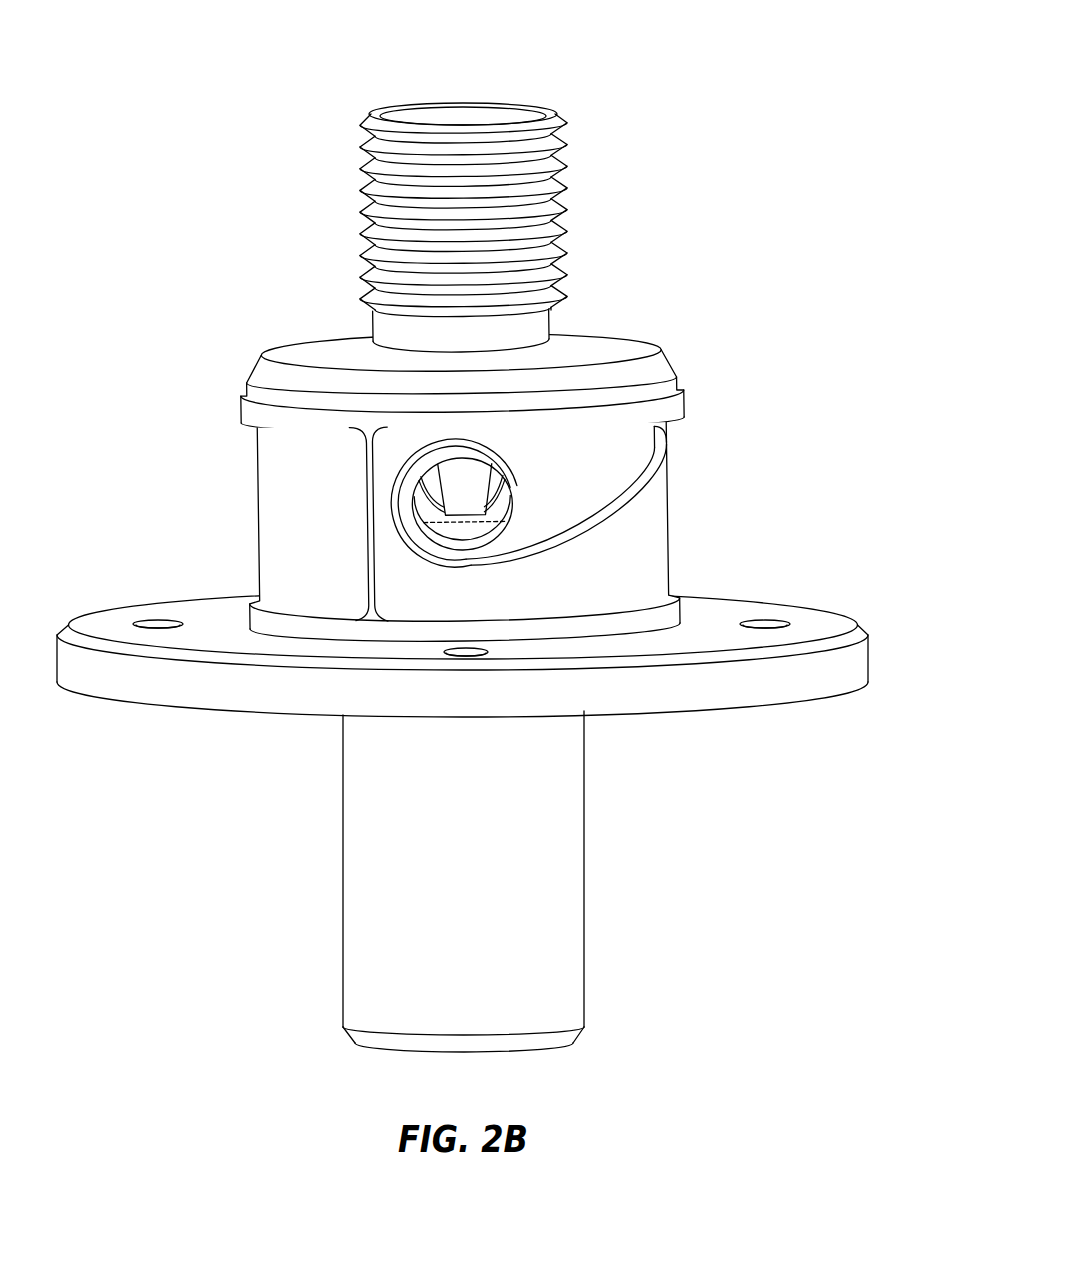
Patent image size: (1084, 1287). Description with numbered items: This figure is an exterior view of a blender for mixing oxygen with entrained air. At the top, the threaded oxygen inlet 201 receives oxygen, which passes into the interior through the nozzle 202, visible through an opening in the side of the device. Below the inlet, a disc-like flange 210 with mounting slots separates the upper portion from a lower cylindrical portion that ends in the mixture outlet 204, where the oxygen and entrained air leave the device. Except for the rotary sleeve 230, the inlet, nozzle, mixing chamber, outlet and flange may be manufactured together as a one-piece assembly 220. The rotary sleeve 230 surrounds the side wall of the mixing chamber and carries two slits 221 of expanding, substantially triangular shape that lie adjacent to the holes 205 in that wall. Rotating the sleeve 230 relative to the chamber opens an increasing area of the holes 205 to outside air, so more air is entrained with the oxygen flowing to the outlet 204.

The oxygen inlet 201 is at (503, 107).
The nozzle 202 is at (473, 472).
The mixture outlet 204 is at (519, 1052).
The holes 205 is at (460, 533).
The flange 210 is at (848, 663).
The one-piece assembly 220 is at (627, 378).
The slits 221 is at (558, 508).
The rotary sleeve 230 is at (285, 513).